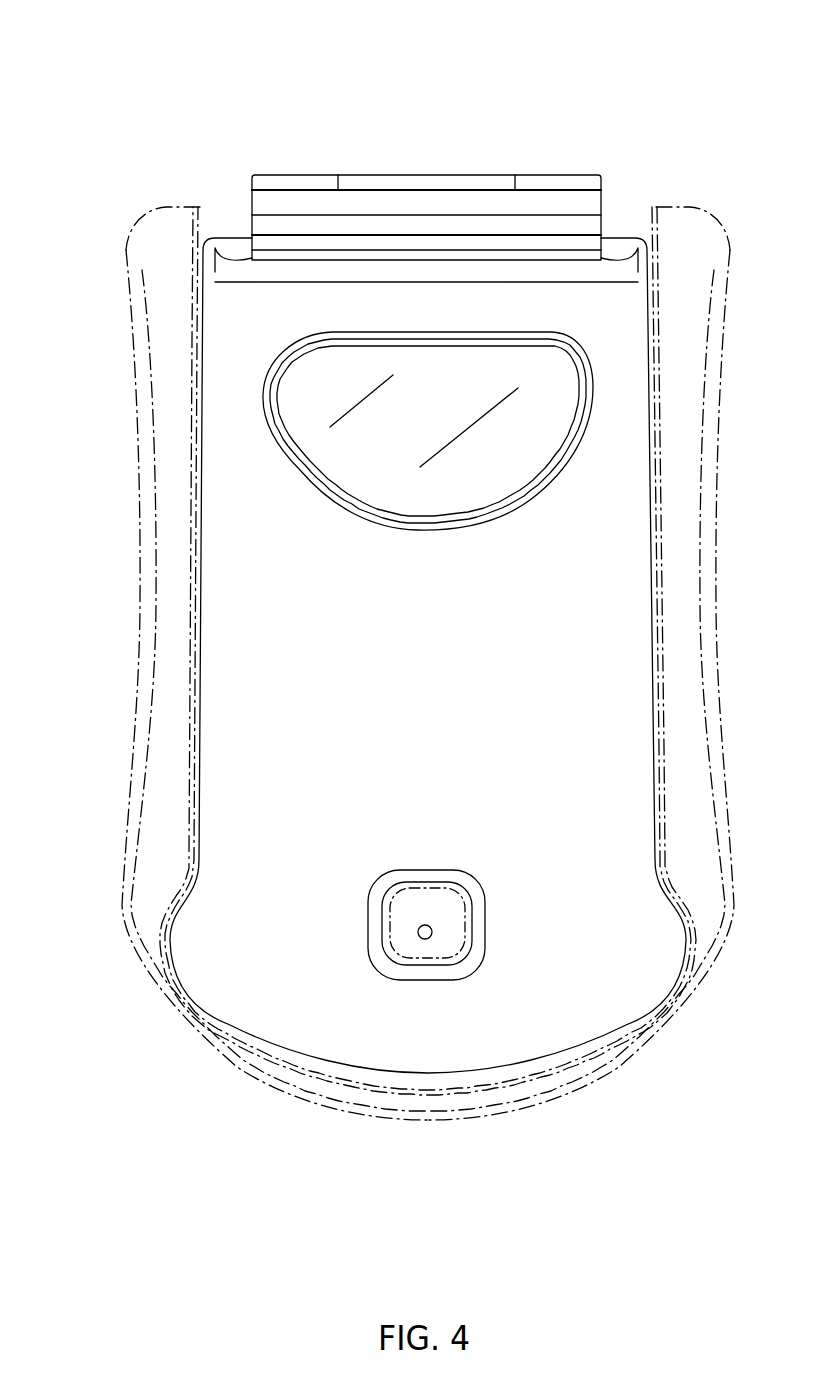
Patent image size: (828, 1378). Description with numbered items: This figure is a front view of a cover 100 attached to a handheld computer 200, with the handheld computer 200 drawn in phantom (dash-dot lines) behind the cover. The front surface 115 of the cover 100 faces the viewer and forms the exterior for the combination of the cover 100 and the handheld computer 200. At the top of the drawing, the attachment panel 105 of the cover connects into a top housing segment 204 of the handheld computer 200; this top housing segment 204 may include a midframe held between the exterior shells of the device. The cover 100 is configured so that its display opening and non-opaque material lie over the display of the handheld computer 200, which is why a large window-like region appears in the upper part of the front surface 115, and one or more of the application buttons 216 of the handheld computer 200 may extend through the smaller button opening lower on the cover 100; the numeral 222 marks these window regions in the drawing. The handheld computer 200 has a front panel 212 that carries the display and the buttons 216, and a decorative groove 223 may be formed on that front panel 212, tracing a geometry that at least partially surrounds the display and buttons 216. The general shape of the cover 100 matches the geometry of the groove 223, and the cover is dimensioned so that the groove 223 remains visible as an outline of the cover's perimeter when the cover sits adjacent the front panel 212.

The cover 100 is at (570, 988).
The attachment panel 105 is at (527, 175).
The front surface 115 is at (506, 774).
The handheld computer 200 is at (133, 157).
The top housing segment 204 is at (218, 207).
The front panel 212 is at (326, 488).
The application buttons 216 is at (440, 923).
The transparent window 222 is at (513, 479).
The decorative groove 223 is at (648, 228).